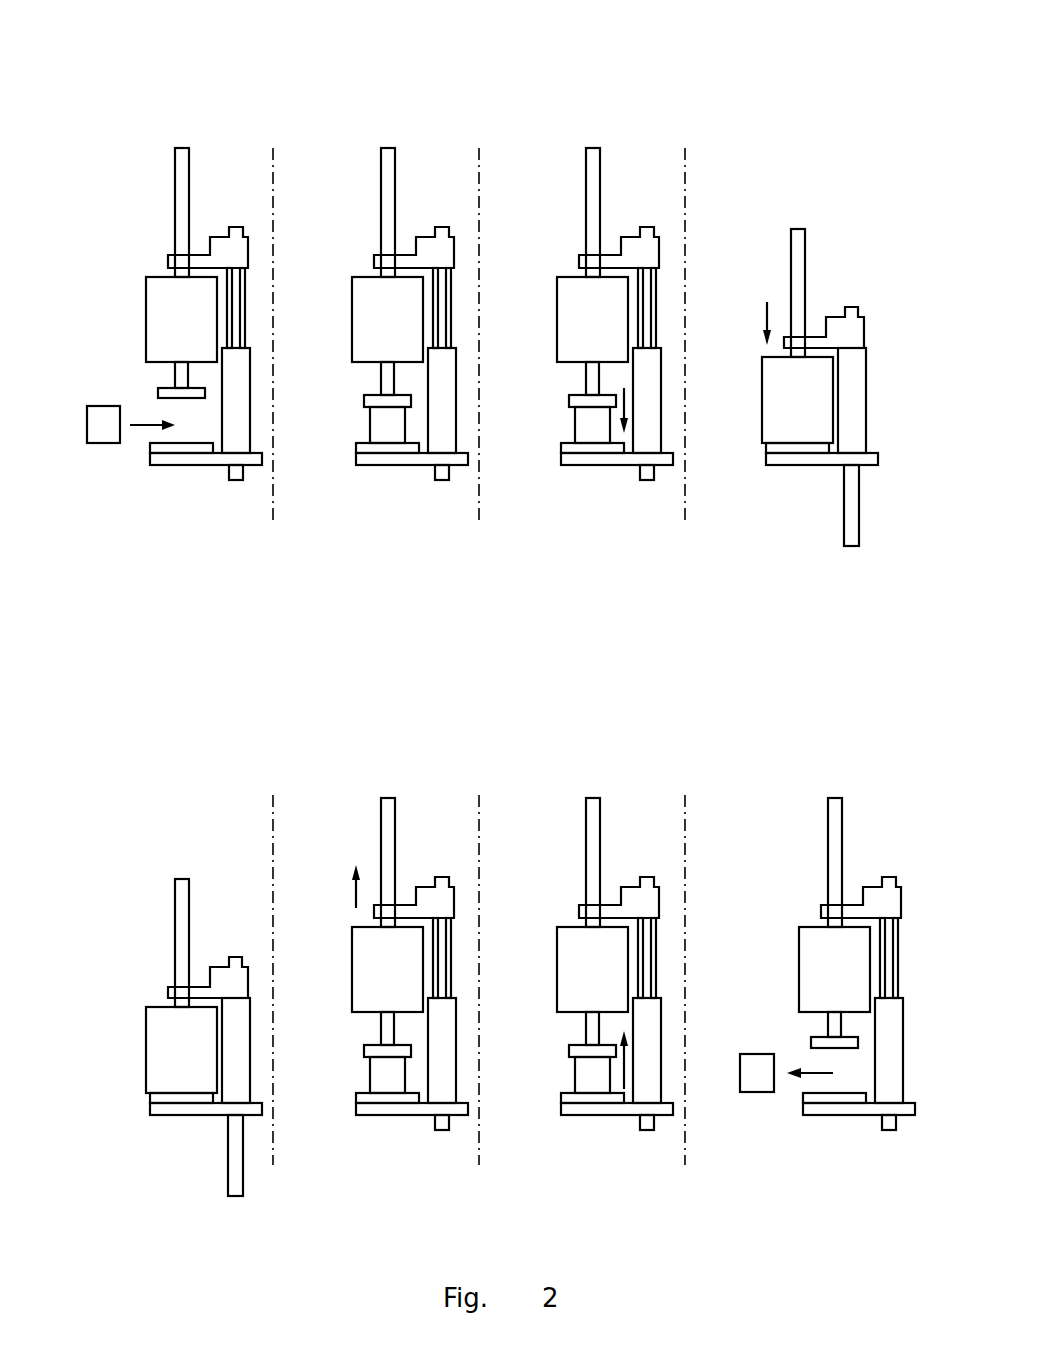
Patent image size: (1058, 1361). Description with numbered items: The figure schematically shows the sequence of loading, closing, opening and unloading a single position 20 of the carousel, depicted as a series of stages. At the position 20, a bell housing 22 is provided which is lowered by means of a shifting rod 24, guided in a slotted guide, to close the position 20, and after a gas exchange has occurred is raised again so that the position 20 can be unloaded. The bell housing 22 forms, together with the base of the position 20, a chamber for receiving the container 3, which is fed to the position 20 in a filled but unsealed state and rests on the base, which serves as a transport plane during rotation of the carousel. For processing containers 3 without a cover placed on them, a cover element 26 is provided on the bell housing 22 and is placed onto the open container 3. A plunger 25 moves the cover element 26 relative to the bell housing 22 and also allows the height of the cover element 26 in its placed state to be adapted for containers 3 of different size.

The position 20 is at (166, 95).
The bell housing 22 is at (158, 292).
The shifting rod 24 is at (229, 471).
The plunger 25 is at (183, 178).
The cover element 26 is at (158, 394).
The container 3 is at (103, 425).